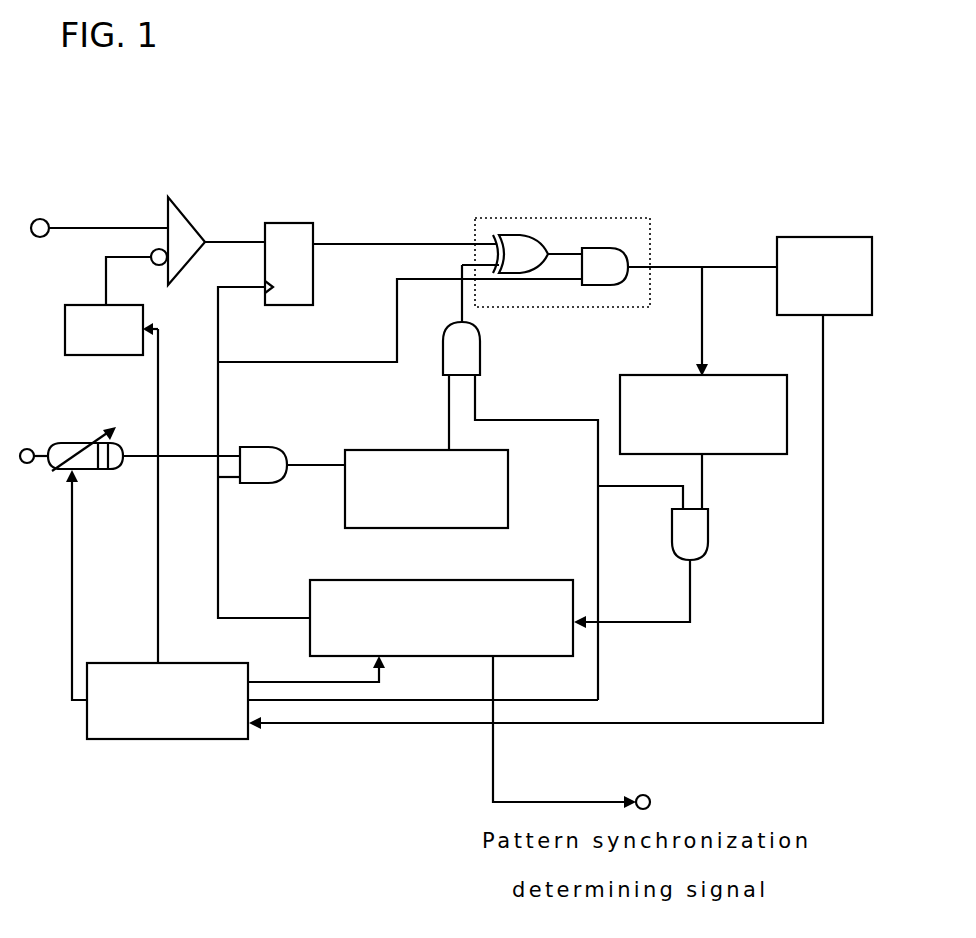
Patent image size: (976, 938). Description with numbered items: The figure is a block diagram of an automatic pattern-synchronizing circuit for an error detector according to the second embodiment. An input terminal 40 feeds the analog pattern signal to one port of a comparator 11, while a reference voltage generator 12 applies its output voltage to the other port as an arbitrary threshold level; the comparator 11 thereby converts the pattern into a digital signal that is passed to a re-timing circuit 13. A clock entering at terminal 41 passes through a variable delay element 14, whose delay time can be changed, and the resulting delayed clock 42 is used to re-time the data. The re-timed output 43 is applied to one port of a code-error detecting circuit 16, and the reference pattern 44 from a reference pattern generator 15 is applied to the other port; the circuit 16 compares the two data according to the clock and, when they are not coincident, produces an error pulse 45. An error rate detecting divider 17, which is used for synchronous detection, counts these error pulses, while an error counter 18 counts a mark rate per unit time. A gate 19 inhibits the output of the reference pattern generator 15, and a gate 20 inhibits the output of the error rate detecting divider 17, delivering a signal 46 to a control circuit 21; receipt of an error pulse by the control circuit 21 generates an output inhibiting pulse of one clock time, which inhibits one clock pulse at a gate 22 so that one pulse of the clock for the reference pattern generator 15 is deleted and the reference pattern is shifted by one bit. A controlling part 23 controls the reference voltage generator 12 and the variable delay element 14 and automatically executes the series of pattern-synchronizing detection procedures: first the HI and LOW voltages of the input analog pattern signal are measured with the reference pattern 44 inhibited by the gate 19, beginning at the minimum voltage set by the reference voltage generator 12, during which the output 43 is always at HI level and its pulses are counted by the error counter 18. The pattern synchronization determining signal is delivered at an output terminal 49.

The comparator 11 is at (172, 211).
The reference voltage generator 12 is at (66, 336).
The re-timing circuit 13 is at (276, 222).
The variable delay element 14 is at (82, 466).
The reference pattern generator 15 is at (412, 520).
The code-error detecting circuit 16 is at (500, 222).
The error rate detecting divider 17 is at (744, 378).
The error counter 18 is at (832, 242).
The gate 19 is at (473, 352).
The gate 20 is at (702, 528).
The control circuit 21 is at (497, 585).
The gate 22 is at (265, 452).
The controlling part 23 is at (178, 668).
The data input terminal 40 is at (99, 213).
The clock input terminal 41 is at (34, 441).
The delayed clock signal 42 is at (400, 448).
The output 43 is at (412, 243).
The reference pattern output 44 is at (446, 394).
The error signal 45 is at (700, 262).
The count-end signal 46 is at (637, 618).
The pattern synchronization determining signal output terminal 49 is at (571, 732).